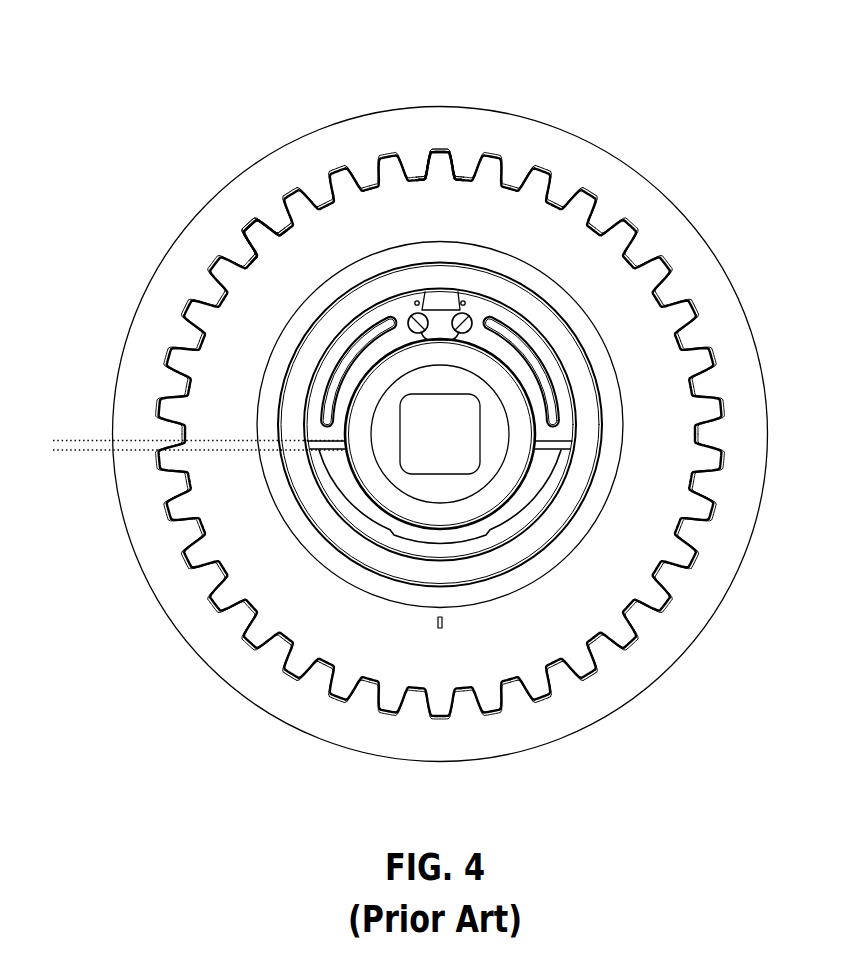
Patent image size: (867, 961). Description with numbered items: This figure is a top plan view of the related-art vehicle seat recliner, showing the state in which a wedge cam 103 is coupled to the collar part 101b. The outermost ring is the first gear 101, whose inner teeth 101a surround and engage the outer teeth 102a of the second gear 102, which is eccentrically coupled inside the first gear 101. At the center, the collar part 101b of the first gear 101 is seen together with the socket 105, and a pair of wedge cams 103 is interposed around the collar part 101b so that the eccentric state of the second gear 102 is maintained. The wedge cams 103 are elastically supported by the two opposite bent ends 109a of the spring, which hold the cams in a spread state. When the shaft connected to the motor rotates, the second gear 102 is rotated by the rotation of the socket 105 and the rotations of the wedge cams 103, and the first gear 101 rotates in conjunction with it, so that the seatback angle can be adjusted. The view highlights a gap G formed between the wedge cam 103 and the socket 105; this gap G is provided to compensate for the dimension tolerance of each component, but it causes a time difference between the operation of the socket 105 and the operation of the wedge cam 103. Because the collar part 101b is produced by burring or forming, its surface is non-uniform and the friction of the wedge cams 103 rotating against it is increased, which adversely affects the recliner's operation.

The first gear 101 is at (493, 130).
The inner teeth 101a is at (467, 170).
The collar part 101b is at (498, 490).
The second gear 102 is at (253, 543).
The outer teeth 102a is at (250, 224).
The wedge cams 103 is at (347, 347).
The socket 105 is at (492, 448).
The bent ends of the spring 109a is at (408, 314).
The gap G is at (62, 403).